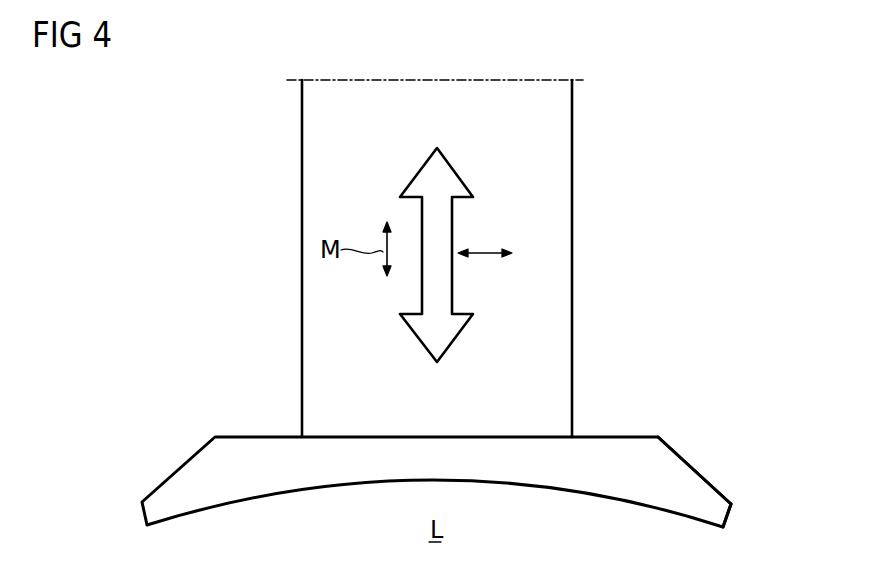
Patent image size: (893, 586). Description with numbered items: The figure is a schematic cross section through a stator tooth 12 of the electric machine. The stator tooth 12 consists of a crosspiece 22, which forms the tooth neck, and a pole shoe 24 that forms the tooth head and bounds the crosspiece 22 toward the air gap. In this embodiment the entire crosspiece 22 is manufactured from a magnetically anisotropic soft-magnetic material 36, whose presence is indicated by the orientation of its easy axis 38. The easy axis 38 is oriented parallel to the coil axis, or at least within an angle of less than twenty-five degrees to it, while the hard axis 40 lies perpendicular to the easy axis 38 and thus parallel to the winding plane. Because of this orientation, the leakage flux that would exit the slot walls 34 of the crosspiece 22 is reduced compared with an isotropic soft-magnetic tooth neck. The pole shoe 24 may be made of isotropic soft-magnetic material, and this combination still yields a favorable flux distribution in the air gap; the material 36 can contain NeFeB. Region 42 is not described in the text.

The stator tooth 12 is at (375, 503).
The crosspiece 22 is at (392, 377).
The pole shoe 24 is at (680, 452).
The slot walls 34 is at (300, 200).
The magnetically anisotropic material 36 is at (558, 221).
The easy axis 38 is at (450, 187).
The hard axis 40 is at (482, 256).
The edge region 42 is at (695, 496).